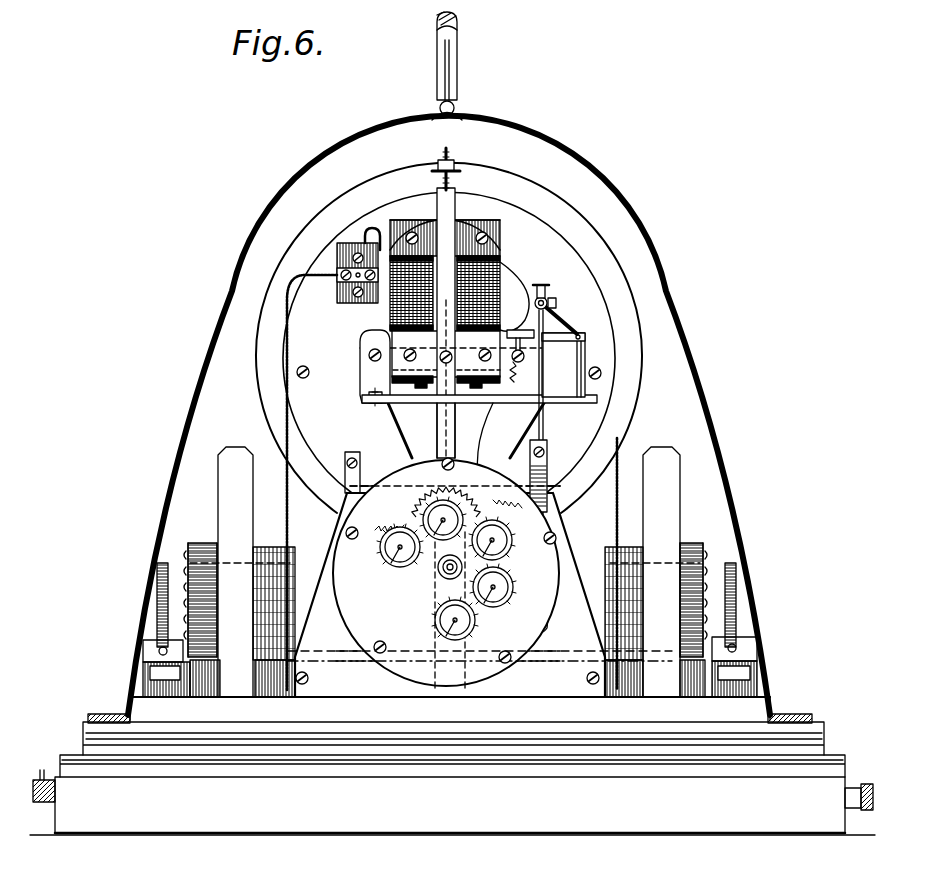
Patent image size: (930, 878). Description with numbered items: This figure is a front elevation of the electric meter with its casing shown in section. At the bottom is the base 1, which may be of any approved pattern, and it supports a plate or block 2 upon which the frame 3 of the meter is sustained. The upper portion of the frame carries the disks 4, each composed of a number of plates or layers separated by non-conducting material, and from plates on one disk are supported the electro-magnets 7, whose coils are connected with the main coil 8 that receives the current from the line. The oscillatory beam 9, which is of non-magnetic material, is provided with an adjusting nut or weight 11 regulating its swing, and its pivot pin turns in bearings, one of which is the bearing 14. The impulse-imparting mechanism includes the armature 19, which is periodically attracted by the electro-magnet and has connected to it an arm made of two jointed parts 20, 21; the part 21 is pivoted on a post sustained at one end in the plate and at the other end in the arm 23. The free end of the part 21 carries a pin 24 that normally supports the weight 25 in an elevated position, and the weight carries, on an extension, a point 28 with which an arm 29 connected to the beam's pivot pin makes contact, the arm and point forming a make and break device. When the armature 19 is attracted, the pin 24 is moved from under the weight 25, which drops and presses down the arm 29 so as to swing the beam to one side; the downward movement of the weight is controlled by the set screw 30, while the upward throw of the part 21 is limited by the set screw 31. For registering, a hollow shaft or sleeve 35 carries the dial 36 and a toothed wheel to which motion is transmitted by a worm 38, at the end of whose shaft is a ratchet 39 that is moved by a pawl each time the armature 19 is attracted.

The base 1 is at (452, 778).
The plate or block 2 is at (450, 605).
The frame 3 is at (444, 411).
The disks 4 is at (450, 419).
The electro-magnets 7 is at (498, 287).
The main coil 8 is at (295, 562).
The oscillatory beam 9 is at (449, 232).
The adjusting nut or weight 11 is at (437, 167).
The bearing 14 is at (446, 356).
The armature 19 is at (466, 403).
The arm part 20 is at (585, 364).
The arm part 21 is at (577, 334).
The arm 23 is at (556, 321).
The pin 24 is at (543, 350).
The weight 25 is at (534, 303).
The point 28 is at (519, 377).
The arm 29 is at (492, 444).
The set screw 30 is at (525, 367).
The set screw 31 is at (543, 294).
The hollow shaft or sleeve 35 is at (440, 578).
The dial 36 is at (446, 574).
The worm 38 is at (440, 487).
The ratchet 39 is at (560, 496).